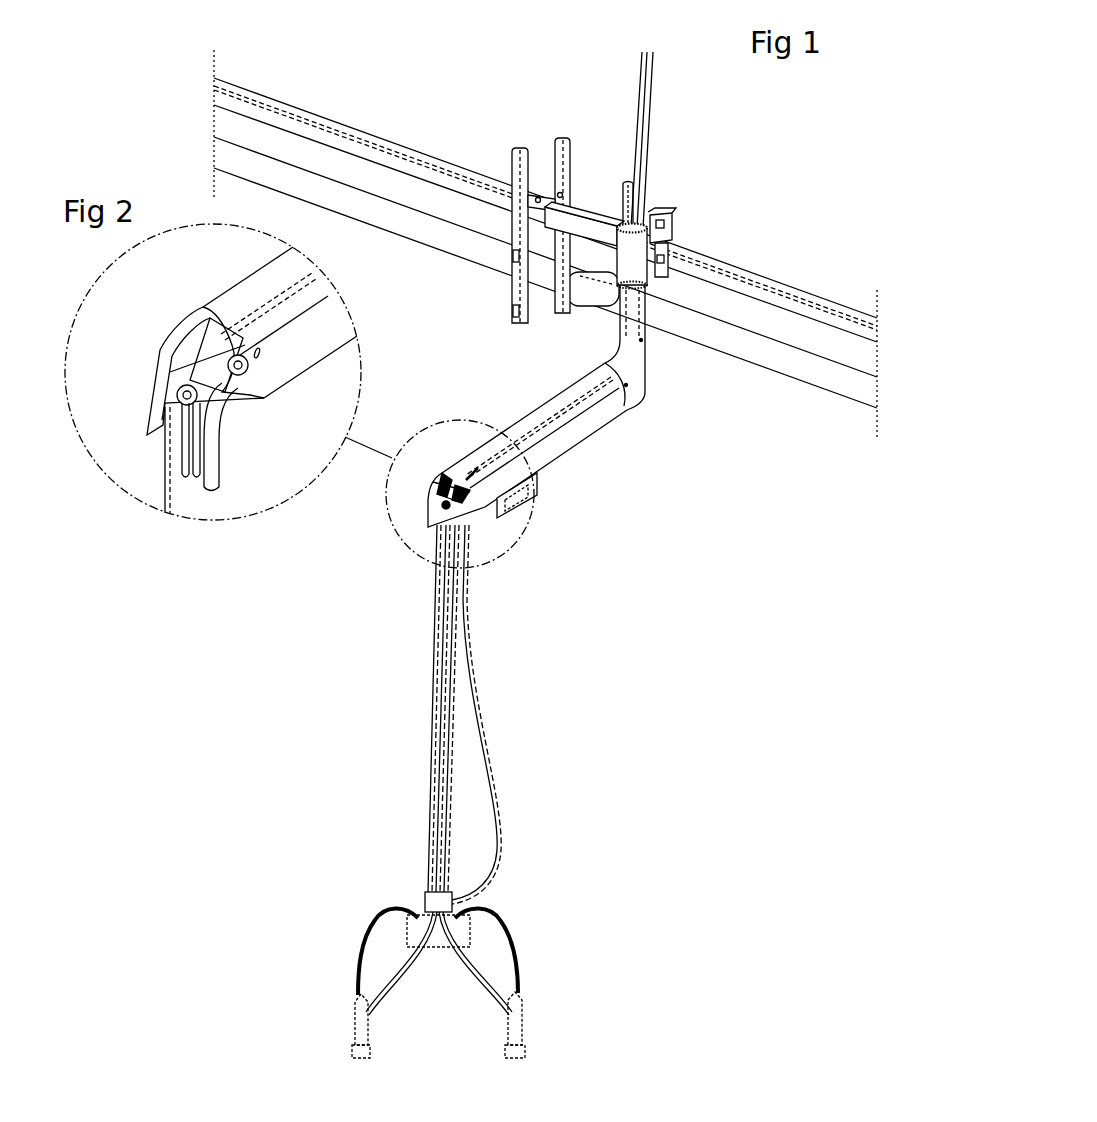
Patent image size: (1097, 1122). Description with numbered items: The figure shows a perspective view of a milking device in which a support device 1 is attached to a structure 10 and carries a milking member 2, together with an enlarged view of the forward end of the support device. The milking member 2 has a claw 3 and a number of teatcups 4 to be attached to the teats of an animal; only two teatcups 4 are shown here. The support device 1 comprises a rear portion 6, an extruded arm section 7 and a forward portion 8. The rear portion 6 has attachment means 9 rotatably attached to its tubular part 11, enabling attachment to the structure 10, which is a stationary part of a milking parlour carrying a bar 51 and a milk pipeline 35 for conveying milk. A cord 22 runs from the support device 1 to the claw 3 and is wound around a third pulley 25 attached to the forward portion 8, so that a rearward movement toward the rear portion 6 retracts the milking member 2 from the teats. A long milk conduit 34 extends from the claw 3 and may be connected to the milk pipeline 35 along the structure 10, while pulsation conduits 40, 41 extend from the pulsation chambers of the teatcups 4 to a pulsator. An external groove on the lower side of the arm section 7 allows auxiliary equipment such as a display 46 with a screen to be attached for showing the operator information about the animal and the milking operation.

In FIG. 1, the support device 1 is at (484, 363).
In FIG. 1, the milking member 2 is at (400, 983).
In FIG. 1, the claw 3 is at (423, 913).
In FIG. 1, the teatcups 4 is at (354, 1026).
In FIG. 1, the rear portion 6 is at (637, 365).
In FIG. 1, the arm section 7 is at (570, 442).
In FIG. 2, the arm section 7 is at (233, 295).
In FIG. 1, the forward portion 8 is at (433, 497).
In FIG. 2, the forward portion 8 is at (165, 355).
In FIG. 1, the attachment means 9 is at (672, 236).
In FIG. 1, the structure 10 is at (482, 139).
In FIG. 1, the tubular part 11 is at (637, 281).
In FIG. 1, the cord 22 is at (432, 795).
In FIG. 2, the cord 22 is at (163, 482).
In FIG. 2, the third pulley 25 is at (167, 408).
In FIG. 1, the long milk conduit 34 is at (477, 757).
In FIG. 1, the milk pipeline 35 is at (788, 362).
In FIG. 1, the pulsation conduit 40 is at (443, 735).
In FIG. 1, the pulsation conduit 41 is at (453, 703).
In FIG. 1, the display 46 is at (520, 503).
In FIG. 1, the bar 51 is at (800, 302).